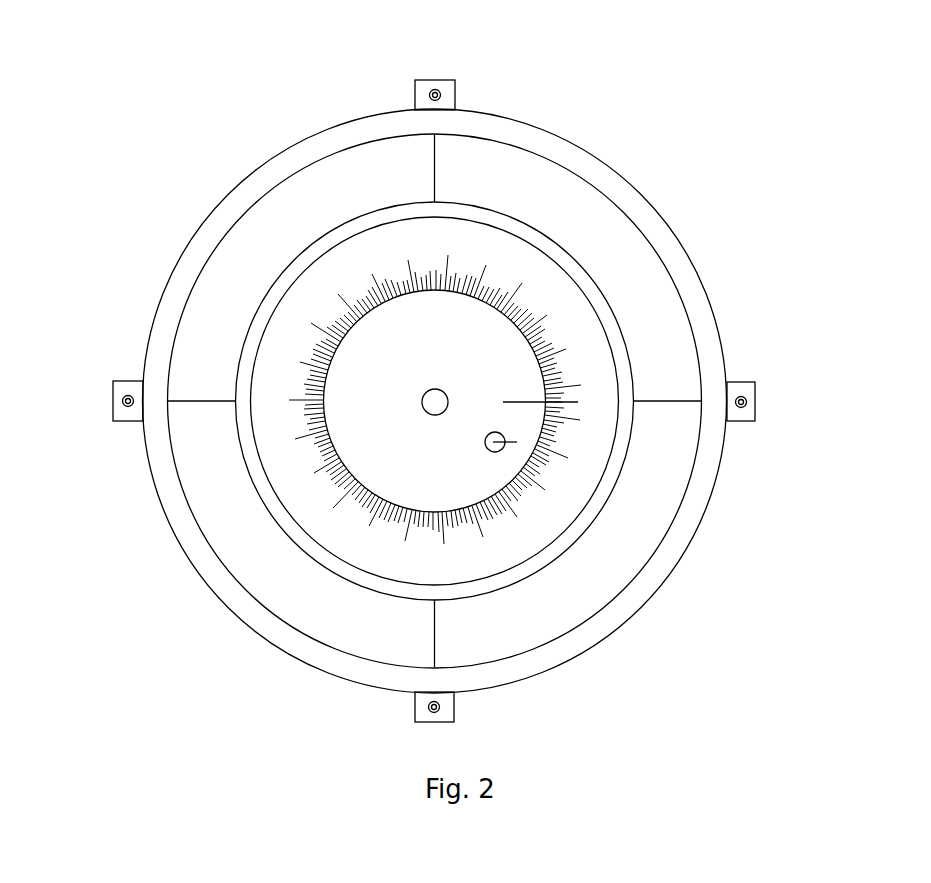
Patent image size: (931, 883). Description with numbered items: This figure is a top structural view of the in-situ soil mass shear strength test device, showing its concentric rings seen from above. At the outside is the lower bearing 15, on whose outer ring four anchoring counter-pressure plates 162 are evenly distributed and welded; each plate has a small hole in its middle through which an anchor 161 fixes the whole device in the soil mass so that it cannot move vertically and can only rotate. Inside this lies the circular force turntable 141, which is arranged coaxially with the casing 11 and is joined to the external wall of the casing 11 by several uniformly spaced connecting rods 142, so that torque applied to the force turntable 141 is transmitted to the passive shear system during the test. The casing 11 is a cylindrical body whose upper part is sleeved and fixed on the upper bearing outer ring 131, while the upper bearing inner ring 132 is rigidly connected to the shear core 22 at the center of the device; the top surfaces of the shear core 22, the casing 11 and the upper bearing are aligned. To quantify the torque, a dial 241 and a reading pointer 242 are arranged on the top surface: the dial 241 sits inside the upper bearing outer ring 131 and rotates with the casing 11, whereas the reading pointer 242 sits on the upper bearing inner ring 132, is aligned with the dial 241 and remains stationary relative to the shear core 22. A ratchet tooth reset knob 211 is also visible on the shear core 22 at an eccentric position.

The lower bearing 15 is at (548, 132).
The force turntable 141 is at (333, 152).
The connecting rod 142 is at (434, 150).
The casing 11 is at (538, 227).
The upper bearing outer ring 131 is at (393, 258).
The upper bearing inner ring 132 is at (347, 290).
The dial 241 is at (317, 330).
The shear core 22 is at (377, 428).
The reading pointer 242 is at (537, 398).
The ratchet tooth reset knob 211 is at (517, 442).
The anchoring counter-pressure plate 162 is at (755, 383).
The anchor 161 is at (755, 407).